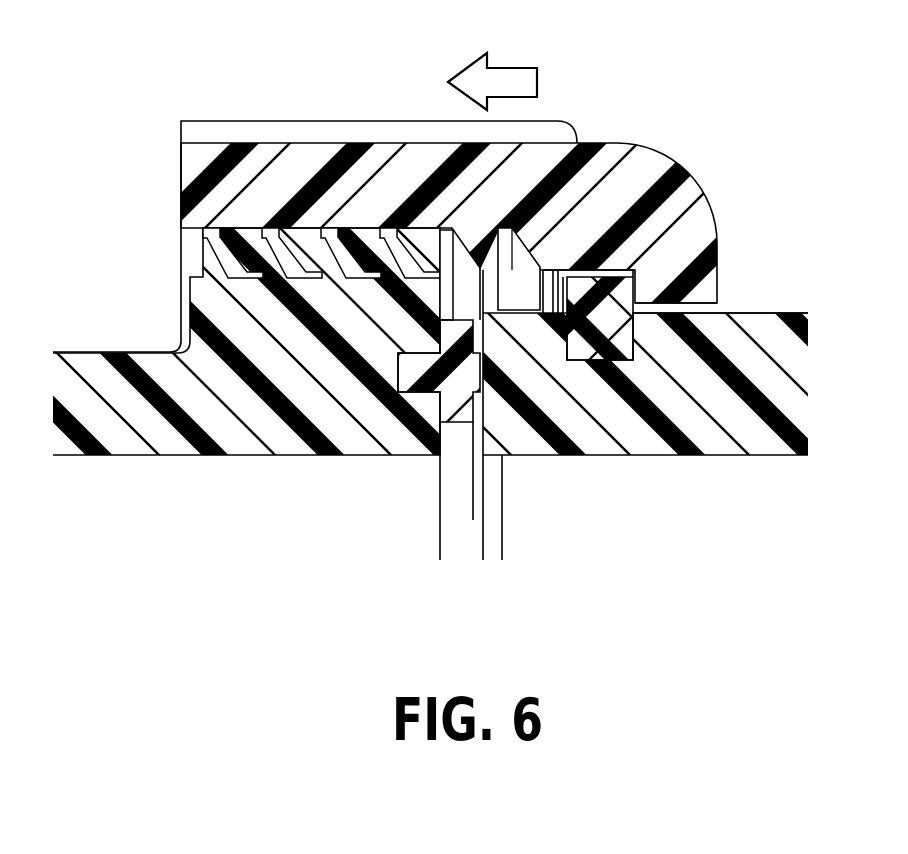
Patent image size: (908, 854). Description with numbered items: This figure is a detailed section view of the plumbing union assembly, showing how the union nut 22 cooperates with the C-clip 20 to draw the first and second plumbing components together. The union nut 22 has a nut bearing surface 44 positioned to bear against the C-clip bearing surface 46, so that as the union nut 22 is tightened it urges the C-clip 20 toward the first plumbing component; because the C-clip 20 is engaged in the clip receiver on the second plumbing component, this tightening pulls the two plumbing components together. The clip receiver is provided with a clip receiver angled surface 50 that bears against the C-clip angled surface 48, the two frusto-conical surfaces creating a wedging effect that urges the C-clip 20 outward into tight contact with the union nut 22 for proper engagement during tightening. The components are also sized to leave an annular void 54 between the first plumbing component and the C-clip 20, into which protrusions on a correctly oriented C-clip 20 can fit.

The C-clip 20 is at (595, 305).
The union nut 22 is at (530, 190).
The nut bearing surface 44 is at (835, 118).
The C-clip bearing surface 46 is at (630, 355).
The C-clip angled surface 48 is at (615, 340).
The clip receiver angled surface 50 is at (835, 118).
The annular void 54 is at (525, 285).